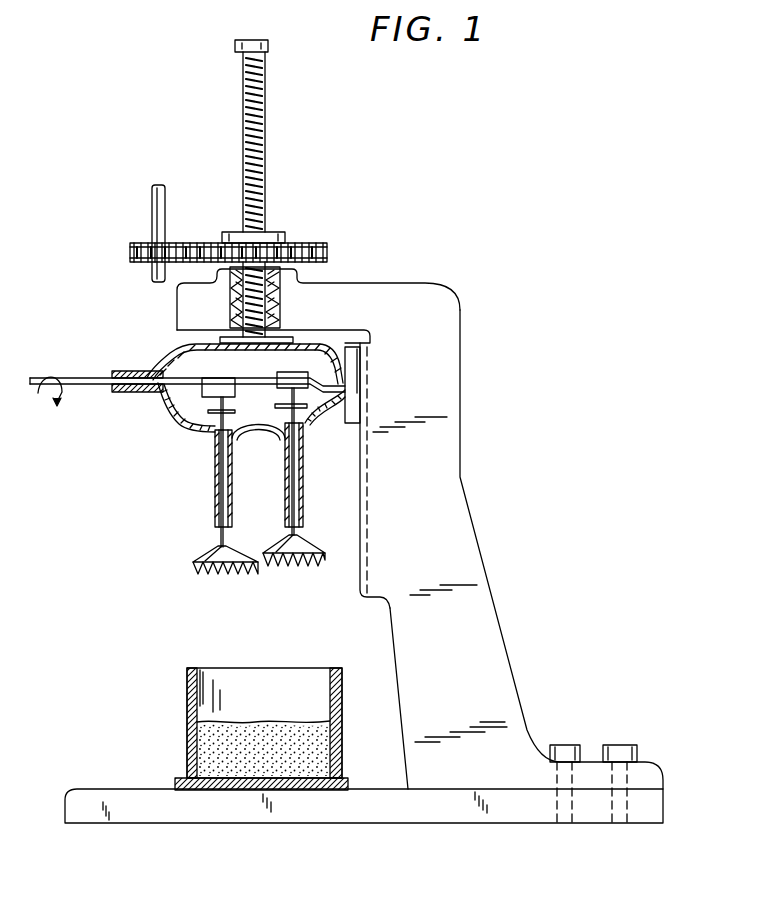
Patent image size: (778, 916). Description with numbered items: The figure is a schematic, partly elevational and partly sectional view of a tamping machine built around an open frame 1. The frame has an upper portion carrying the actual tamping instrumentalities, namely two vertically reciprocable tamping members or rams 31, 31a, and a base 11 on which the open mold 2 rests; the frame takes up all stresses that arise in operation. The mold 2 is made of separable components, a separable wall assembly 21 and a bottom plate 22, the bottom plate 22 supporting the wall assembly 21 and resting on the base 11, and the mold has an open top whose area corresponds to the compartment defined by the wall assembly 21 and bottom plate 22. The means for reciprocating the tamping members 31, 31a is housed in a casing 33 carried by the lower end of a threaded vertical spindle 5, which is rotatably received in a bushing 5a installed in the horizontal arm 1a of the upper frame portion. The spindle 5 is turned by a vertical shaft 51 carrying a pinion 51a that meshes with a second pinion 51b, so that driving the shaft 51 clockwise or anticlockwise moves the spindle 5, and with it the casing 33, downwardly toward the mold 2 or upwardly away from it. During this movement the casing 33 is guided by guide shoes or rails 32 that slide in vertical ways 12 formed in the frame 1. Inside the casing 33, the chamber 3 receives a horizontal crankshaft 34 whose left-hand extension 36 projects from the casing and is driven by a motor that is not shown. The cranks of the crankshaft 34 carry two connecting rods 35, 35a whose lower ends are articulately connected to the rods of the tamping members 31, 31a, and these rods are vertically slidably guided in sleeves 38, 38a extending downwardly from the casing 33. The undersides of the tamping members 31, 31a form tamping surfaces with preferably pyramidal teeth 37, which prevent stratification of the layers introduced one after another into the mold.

The open frame 1 is at (480, 627).
The horizontal arm 1a is at (327, 293).
The open mold 2 is at (217, 703).
The chamber 3 is at (183, 365).
The threaded vertical spindle 5 is at (263, 188).
The bushing 5a is at (232, 310).
The base 11 is at (235, 810).
The vertical ways 12 is at (353, 508).
The separable wall assembly 21 is at (190, 679).
The bottom plate 22 is at (178, 787).
The tamping member 31 is at (220, 553).
The tamping member 31a is at (297, 547).
The guide shoes or rails 32 is at (353, 358).
The casing 33 is at (168, 405).
The horizontal crankshaft 34 is at (268, 379).
The connecting rod 35 is at (213, 402).
The connecting rod 35a is at (300, 393).
The left-hand extension 36 is at (105, 364).
The pyramidal teeth 37 is at (223, 575).
The sleeve 38 is at (215, 497).
The sleeve 38a is at (302, 500).
The vertical shaft 51 is at (151, 203).
The pinion 51a is at (132, 253).
The second pinion 51b is at (308, 245).